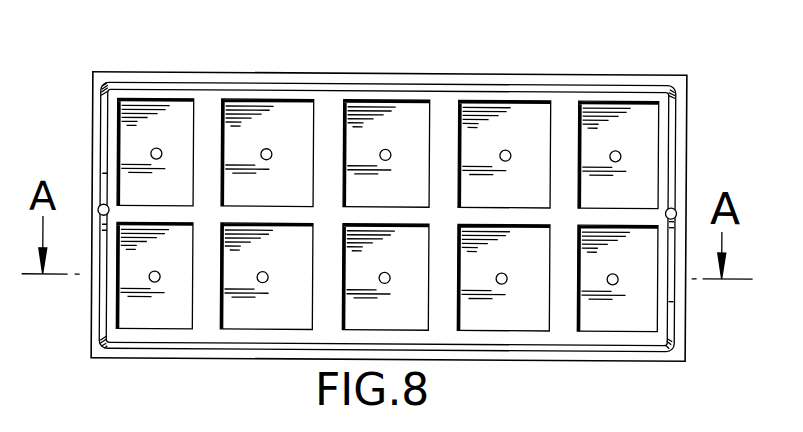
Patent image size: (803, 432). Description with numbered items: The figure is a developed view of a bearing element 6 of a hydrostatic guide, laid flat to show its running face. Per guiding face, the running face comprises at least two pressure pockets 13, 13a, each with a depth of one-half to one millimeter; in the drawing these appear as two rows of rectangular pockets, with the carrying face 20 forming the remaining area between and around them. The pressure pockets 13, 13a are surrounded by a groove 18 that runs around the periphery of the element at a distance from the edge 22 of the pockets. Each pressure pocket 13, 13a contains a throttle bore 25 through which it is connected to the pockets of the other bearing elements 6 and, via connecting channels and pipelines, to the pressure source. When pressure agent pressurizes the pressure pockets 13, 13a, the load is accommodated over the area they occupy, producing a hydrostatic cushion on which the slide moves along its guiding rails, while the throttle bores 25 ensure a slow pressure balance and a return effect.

The carrying face 20 is at (208, 112).
The bearing element 6 is at (332, 113).
The groove 18 is at (518, 92).
The edge 22 is at (623, 107).
The pressure pocket 13a is at (647, 143).
The pressure pocket 13 is at (643, 316).
The throttle bore 25 is at (152, 279).